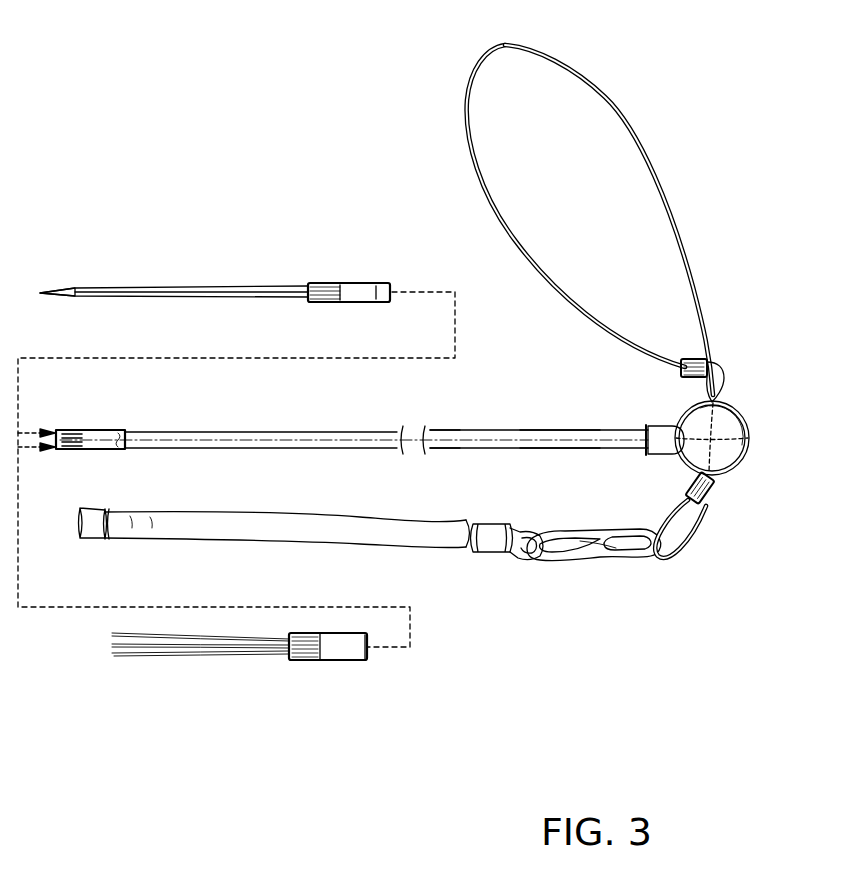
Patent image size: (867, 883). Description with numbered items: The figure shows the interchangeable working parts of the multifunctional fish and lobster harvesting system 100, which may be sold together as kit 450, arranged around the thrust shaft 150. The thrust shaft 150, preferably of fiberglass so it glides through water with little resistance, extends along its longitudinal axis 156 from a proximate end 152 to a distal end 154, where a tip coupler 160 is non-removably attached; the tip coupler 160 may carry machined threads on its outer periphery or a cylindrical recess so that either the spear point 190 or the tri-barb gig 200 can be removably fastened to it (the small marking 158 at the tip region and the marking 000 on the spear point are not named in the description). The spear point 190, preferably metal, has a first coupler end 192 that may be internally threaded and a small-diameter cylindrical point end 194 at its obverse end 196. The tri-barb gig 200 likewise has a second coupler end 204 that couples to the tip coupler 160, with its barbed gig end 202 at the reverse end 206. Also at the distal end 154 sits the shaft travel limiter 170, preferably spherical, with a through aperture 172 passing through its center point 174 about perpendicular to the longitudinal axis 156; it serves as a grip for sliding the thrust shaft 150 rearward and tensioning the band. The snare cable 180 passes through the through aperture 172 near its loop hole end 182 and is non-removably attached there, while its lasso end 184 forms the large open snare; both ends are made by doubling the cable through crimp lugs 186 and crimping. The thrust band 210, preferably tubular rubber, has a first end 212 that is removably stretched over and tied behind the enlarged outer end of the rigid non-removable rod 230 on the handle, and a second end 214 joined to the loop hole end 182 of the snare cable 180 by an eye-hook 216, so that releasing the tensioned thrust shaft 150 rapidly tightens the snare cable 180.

The multifunctional fish and lobster harvesting system 100 is at (216, 96).
The kit 450 is at (208, 128).
The thrust shaft 150 is at (268, 432).
The proximate end 152 is at (649, 428).
The distal end 154 is at (58, 430).
The longitudinal axis 156 is at (571, 441).
The tip coil 158 is at (90, 452).
The tip coupler 160 is at (112, 451).
The shaft travel limiter 170 is at (737, 452).
The through aperture 172 is at (719, 387).
The center point 174 is at (746, 446).
The snare cable 180 is at (486, 47).
The loop hole end 182 is at (681, 540).
The lasso end 184 is at (642, 164).
The crimp lug 186 is at (705, 362).
The spear point 190 is at (149, 289).
The first coupler end 192 is at (392, 289).
The point end 194 is at (52, 291).
The obverse end 196 is at (381, 302).
The hub collar 000 is at (372, 284).
The tri-barb gig 200 is at (322, 654).
The gig end 202 is at (117, 656).
The second coupler end 204 is at (368, 651).
The reverse end 206 is at (358, 654).
The thrust band 210 is at (326, 541).
The first end 212 is at (83, 541).
The second end 214 is at (501, 561).
The eye-hook 216 is at (568, 530).
The rigid non-removable rod 230 is at (452, 430).